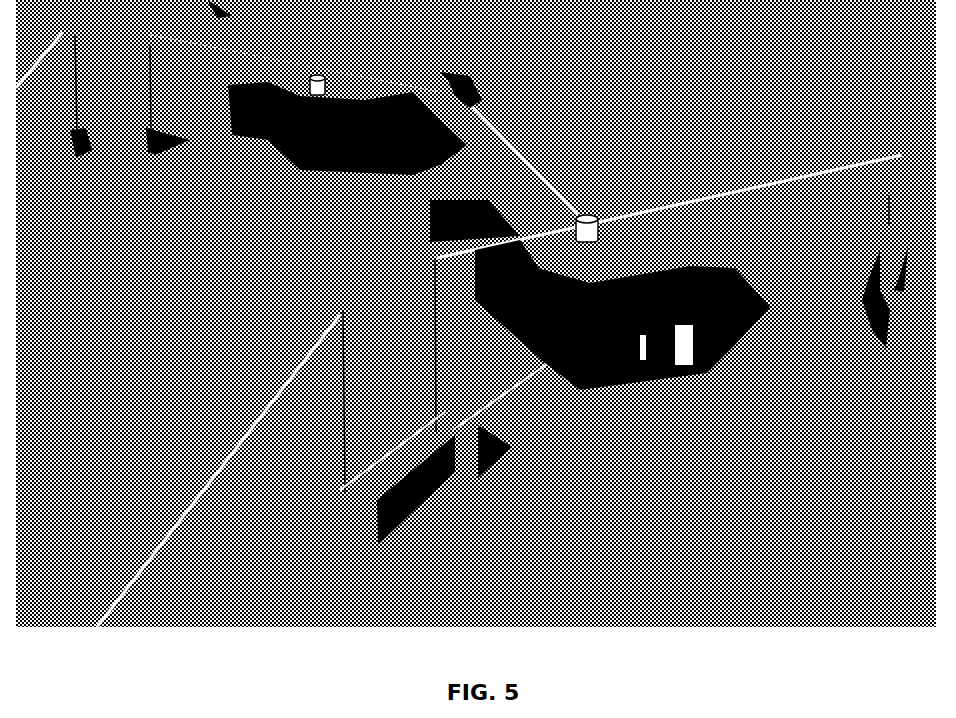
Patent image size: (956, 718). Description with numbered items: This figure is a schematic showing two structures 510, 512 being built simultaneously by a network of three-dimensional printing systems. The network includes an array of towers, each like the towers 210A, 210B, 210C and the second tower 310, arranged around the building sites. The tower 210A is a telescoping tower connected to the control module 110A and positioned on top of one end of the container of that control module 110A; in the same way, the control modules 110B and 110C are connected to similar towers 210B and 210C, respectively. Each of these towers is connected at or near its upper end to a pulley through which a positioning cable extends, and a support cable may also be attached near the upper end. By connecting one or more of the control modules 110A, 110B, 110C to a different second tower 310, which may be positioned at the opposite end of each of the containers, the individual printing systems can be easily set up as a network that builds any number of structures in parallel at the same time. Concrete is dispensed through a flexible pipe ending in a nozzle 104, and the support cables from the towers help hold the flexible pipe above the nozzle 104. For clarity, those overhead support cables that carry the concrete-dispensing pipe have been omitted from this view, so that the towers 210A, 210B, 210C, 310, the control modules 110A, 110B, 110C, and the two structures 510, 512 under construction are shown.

The nozzle 104 is at (317, 75).
The control module 110A is at (435, 495).
The control module 110B is at (410, 210).
The control module 110C is at (902, 330).
The telescoping tower 210A is at (432, 312).
The tower 210B is at (458, 124).
The tower 210C is at (888, 207).
The second tower 310 is at (343, 395).
The structure 510 is at (615, 385).
The structure 512 is at (312, 160).